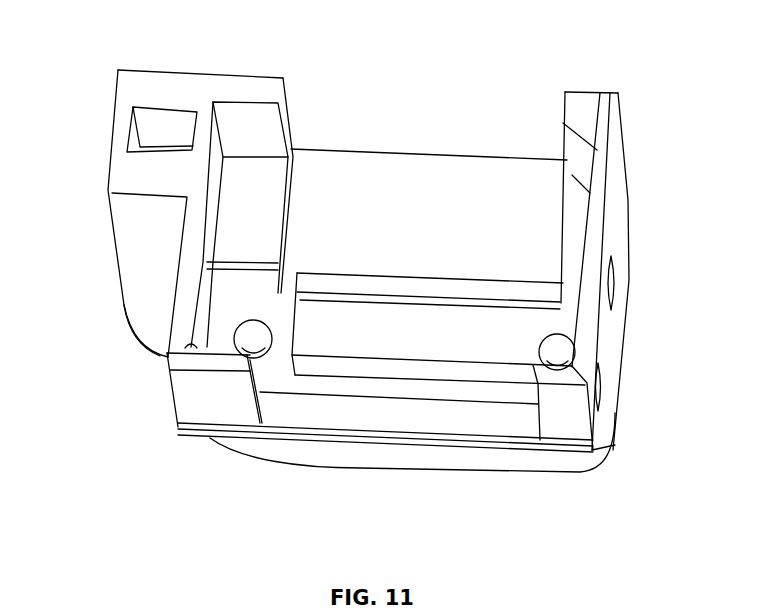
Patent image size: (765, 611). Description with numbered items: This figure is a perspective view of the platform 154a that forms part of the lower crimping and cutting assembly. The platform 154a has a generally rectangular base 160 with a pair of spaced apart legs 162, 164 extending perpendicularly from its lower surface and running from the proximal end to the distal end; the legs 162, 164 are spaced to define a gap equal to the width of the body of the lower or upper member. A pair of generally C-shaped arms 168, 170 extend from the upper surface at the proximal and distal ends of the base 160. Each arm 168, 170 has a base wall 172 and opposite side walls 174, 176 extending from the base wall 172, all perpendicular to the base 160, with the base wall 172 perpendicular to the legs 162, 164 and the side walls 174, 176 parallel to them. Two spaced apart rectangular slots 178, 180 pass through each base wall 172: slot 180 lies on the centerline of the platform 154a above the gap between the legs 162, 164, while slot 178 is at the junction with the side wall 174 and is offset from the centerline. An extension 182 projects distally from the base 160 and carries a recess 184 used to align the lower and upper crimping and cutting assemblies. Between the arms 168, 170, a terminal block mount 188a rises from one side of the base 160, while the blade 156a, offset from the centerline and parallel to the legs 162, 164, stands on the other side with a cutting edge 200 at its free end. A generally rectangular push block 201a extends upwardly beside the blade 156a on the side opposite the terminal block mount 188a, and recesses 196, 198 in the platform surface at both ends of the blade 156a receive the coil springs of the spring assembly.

The platform 154a is at (651, 409).
The blade 156a is at (383, 287).
The base 160 is at (430, 170).
The leg 162 is at (615, 413).
The leg 164 is at (683, 316).
The arm 168 is at (610, 188).
The arm 170 is at (183, 323).
The base wall 172 is at (185, 210).
The side wall 174 is at (212, 397).
The side wall 176 is at (235, 88).
The rectangular slot 178 is at (606, 388).
The rectangular slot 180 is at (208, 242).
The extension 182 is at (132, 165).
The recess 184 is at (153, 122).
The terminal block mount 188a is at (300, 195).
The recess 196 is at (522, 405).
The recess 198 is at (250, 357).
The cutting edge 200 is at (431, 272).
The push block 201a is at (445, 347).